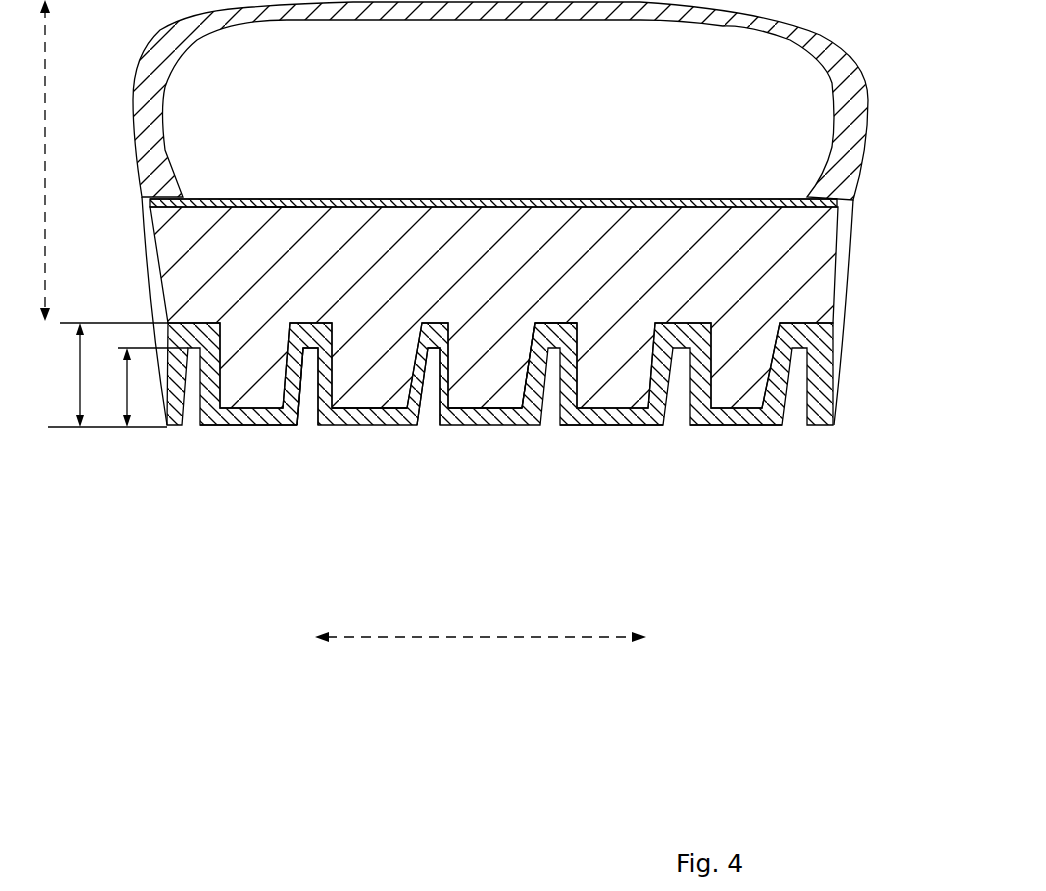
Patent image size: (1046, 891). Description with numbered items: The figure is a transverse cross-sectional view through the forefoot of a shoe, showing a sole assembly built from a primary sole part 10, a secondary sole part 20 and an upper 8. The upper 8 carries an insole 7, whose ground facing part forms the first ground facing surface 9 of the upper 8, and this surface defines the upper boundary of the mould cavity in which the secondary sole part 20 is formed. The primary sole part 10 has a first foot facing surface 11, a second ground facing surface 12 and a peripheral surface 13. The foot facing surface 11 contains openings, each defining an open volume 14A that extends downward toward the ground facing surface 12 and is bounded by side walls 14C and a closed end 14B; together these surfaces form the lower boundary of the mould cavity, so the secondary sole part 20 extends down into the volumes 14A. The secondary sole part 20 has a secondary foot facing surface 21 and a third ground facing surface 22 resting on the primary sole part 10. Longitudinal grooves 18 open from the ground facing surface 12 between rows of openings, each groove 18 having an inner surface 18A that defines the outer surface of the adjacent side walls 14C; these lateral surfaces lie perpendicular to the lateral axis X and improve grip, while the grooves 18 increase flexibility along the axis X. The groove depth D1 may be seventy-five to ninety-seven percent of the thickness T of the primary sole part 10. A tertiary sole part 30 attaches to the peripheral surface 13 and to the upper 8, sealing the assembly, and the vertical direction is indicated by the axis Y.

The insole 7 is at (358, 200).
The upper 8 is at (862, 143).
The first ground facing surface 9 is at (514, 207).
The primary sole part 10 is at (248, 420).
The first foot facing surface 11 is at (563, 314).
The second ground facing surface 12 is at (740, 425).
The peripheral surface 13 is at (833, 353).
The open volume 14A is at (372, 374).
The closed end 14B is at (483, 398).
The side wall of open volume 14C is at (527, 383).
The longitudinal groove 18 is at (318, 435).
The inner surface of groove 18A is at (305, 418).
The secondary sole part 20 is at (483, 283).
The secondary foot facing surface 21 is at (262, 203).
The third ground facing surface 22 is at (588, 412).
The tertiary sole part 30 is at (838, 315).
The thickness of the primary sole part T is at (108, 375).
The depth of the grooves D1 is at (139, 387).
The lateral axis X is at (513, 648).
The height direction Y is at (40, 195).